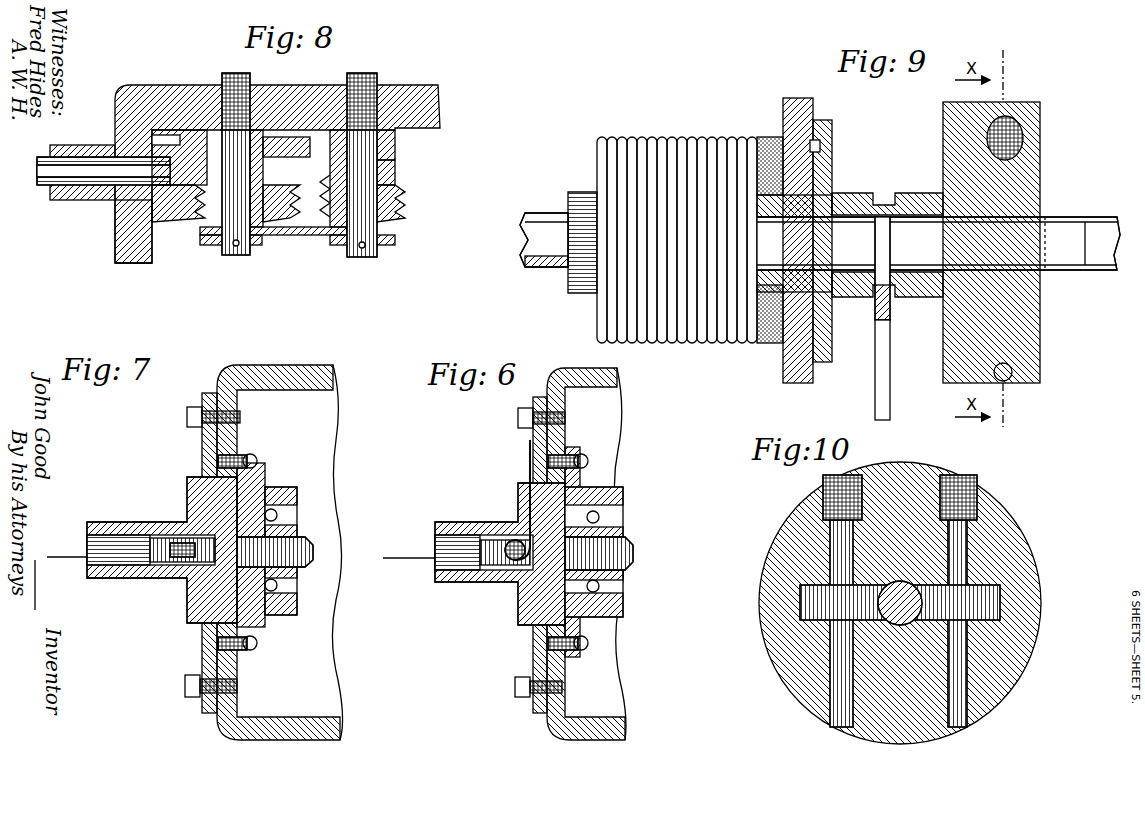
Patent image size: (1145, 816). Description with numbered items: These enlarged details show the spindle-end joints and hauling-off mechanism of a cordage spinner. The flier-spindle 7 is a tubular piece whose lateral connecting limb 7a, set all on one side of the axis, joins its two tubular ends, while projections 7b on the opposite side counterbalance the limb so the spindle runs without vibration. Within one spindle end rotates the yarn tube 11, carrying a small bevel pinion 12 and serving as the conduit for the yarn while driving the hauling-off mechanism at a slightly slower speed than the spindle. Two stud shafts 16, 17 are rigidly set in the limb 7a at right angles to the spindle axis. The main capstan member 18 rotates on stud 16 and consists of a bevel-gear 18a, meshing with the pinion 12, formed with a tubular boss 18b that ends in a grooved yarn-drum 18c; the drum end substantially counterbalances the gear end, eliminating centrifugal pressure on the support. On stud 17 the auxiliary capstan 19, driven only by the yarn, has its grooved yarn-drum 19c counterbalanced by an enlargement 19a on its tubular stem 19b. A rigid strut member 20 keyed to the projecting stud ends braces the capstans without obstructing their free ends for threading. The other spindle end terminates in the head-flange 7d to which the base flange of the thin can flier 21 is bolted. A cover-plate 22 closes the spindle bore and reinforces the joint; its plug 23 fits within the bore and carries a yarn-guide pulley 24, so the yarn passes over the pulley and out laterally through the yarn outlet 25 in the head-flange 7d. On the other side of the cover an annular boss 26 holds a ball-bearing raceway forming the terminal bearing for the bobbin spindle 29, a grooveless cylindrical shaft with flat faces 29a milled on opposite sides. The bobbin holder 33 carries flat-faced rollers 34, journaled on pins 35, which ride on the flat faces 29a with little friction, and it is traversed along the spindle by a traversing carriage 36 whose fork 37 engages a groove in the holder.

In FIG. 8, the flier-spindle 7 is at (100, 198).
In FIG. 7, the flier-spindle 7 is at (112, 522).
In FIG. 8, the connecting limb 7a is at (410, 100).
In FIG. 8, the projections 7b is at (152, 263).
In FIG. 7, the head-flange 7d is at (205, 447).
In FIG. 6, the head-flange 7d is at (533, 440).
In FIG. 8, the yarn tube 11 is at (45, 190).
In FIG. 8, the bevel pinion 12 is at (140, 222).
In FIG. 8, the stud shaft 16 is at (236, 256).
In FIG. 8, the stud shaft 17 is at (362, 258).
In FIG. 8, the main capstan member 18 is at (273, 153).
In FIG. 8, the bevel-gear 18a is at (290, 158).
In FIG. 8, the tubular boss 18b is at (180, 158).
In FIG. 8, the grooved yarn-drum 18c is at (200, 218).
In FIG. 8, the auxiliary capstan 19 is at (444, 176).
In FIG. 8, the enlargement 19a is at (395, 140).
In FIG. 8, the tubular stem 19b is at (405, 170).
In FIG. 8, the grooved yarn-drum 19c is at (400, 198).
In FIG. 8, the strut member 20 is at (290, 236).
In FIG. 7, the can flier 21 is at (305, 365).
In FIG. 6, the can flier 21 is at (617, 378).
In FIG. 7, the cover-plate 22 is at (243, 482).
In FIG. 6, the cover-plate 22 is at (577, 462).
In FIG. 7, the plug 23 is at (122, 568).
In FIG. 6, the plug 23 is at (492, 580).
In FIG. 7, the yarn-guide pulley 24 is at (172, 562).
In FIG. 6, the yarn-guide pulley 24 is at (508, 542).
In FIG. 6, the yarn outlet 25 is at (530, 480).
In FIG. 7, the annular boss 26 is at (298, 490).
In FIG. 6, the annular boss 26 is at (612, 498).
In FIG. 9, the bobbin spindle 29 is at (525, 250).
In FIG. 7, the bobbin spindle 29 is at (312, 547).
In FIG. 6, the bobbin spindle 29 is at (627, 550).
In FIG. 10, the bobbin spindle 29 is at (918, 592).
In FIG. 9, the flat faces 29a is at (1082, 243).
In FIG. 9, the bobbin holder 33 is at (943, 150).
In FIG. 10, the bobbin holder 33 is at (785, 571).
In FIG. 9, the flat-faced rollers 34 is at (1048, 228).
In FIG. 10, the flat-faced rollers 34 is at (995, 593).
In FIG. 9, the pins 35 is at (1010, 341).
In FIG. 10, the pins 35 is at (963, 690).
In FIG. 9, the traversing carriage 36 is at (890, 408).
In FIG. 9, the fork 37 is at (889, 318).